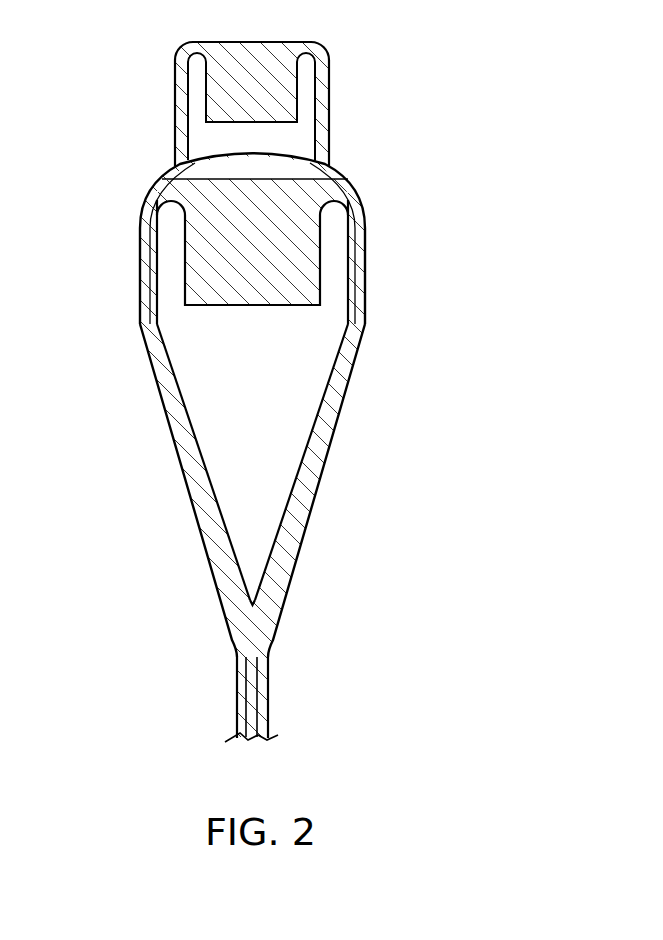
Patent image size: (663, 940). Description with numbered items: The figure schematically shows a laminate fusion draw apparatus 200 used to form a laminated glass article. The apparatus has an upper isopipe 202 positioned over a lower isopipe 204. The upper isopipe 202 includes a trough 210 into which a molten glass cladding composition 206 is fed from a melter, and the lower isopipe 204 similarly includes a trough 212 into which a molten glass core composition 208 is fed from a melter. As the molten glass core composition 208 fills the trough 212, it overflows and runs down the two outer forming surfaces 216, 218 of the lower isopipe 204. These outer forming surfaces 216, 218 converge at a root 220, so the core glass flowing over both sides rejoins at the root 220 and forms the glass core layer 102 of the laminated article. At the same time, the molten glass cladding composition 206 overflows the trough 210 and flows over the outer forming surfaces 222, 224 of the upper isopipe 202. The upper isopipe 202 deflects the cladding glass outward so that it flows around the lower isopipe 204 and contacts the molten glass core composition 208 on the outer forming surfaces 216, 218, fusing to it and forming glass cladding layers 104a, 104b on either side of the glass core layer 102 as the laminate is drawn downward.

The laminate fusion draw apparatus 200 is at (378, 63).
The upper isopipe 202 is at (300, 60).
The lower isopipe 204 is at (333, 236).
The molten glass cladding composition 206 is at (248, 52).
The molten glass core composition 208 is at (310, 198).
The trough 210 is at (200, 88).
The trough 212 is at (185, 270).
The outer forming surface 216 is at (327, 383).
The outer forming surface 218 is at (172, 368).
The root 220 is at (262, 612).
The outer forming surface 222 is at (190, 127).
The outer forming surface 224 is at (322, 106).
The glass core layer 102 is at (247, 658).
The glass cladding layer 104a is at (240, 704).
The glass cladding layer 104b is at (266, 695).